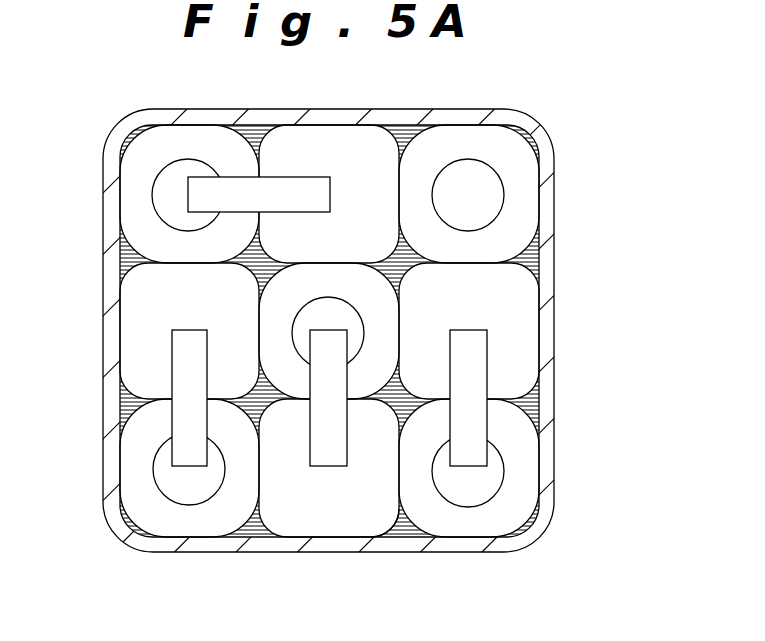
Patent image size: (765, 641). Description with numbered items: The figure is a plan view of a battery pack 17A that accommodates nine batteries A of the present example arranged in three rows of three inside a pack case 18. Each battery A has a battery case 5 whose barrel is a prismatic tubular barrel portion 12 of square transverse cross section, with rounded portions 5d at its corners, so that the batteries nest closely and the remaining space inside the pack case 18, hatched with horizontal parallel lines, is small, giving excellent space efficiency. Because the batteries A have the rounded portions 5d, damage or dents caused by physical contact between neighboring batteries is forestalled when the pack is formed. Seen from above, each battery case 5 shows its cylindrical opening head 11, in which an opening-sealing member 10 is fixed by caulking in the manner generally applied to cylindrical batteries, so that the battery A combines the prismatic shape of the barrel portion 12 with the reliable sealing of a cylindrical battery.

The battery case 5 is at (343, 502).
The rounded portion 5d is at (397, 522).
The opening-sealing member 10 is at (195, 488).
The opening head 11 is at (138, 503).
The prismatic tubular barrel portion 12 is at (245, 520).
The battery pack 17A is at (559, 312).
The pack case 18 is at (542, 150).
The battery A is at (519, 477).